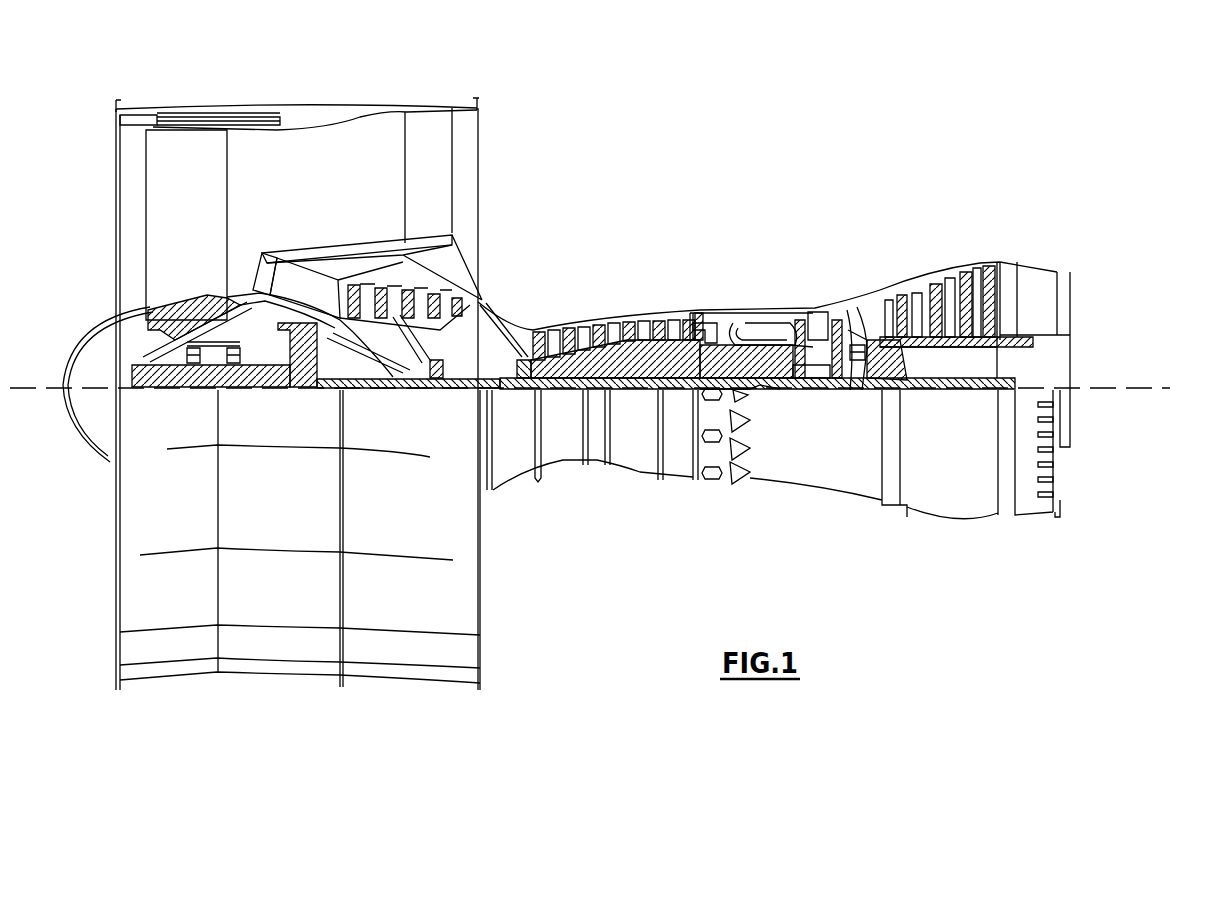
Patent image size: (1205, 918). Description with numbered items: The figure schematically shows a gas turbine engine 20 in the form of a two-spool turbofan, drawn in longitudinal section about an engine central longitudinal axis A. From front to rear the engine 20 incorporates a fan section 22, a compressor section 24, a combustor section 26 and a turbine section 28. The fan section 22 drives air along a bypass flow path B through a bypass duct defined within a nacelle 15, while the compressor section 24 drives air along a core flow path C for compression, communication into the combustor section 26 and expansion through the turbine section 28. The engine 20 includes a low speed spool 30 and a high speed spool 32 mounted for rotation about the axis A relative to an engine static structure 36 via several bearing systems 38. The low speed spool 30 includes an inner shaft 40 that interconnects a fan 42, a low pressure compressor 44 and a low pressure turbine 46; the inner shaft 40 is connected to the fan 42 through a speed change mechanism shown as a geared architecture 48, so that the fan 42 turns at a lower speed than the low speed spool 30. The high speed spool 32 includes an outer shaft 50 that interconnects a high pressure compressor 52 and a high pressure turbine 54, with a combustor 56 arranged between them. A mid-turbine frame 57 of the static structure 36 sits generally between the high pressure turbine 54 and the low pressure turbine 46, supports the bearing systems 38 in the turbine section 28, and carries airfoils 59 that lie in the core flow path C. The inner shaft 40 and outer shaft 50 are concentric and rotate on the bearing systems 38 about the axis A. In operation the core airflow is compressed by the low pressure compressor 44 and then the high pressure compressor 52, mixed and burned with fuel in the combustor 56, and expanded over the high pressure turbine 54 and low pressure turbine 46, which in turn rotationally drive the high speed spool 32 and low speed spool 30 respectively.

The gas turbine engine 20 is at (760, 158).
The fan section 22 is at (229, 100).
The nacelle 15 is at (297, 112).
The fan 42 is at (202, 237).
The low pressure compressor 44 is at (400, 298).
The geared architecture 48 is at (307, 373).
The bearing systems 38 is at (440, 373).
The inner shaft 40 is at (500, 397).
The compressor section 24 is at (528, 298).
The high pressure compressor 52 is at (613, 363).
The low speed spool 30 is at (637, 393).
The engine static structure 36 is at (677, 477).
The combustor section 26 is at (753, 285).
The high speed spool 32 is at (687, 330).
The combustor 56 is at (757, 330).
The high pressure turbine 54 is at (828, 310).
The mid-turbine frame 57 is at (862, 297).
The outer shaft 50 is at (765, 385).
The turbine section 28 is at (900, 250).
The low pressure turbine 46 is at (947, 280).
The airfoils 59 is at (860, 325).
The engine central longitudinal axis A is at (1148, 388).
The bypass flow path B is at (265, 182).
The core flow path C is at (307, 290).